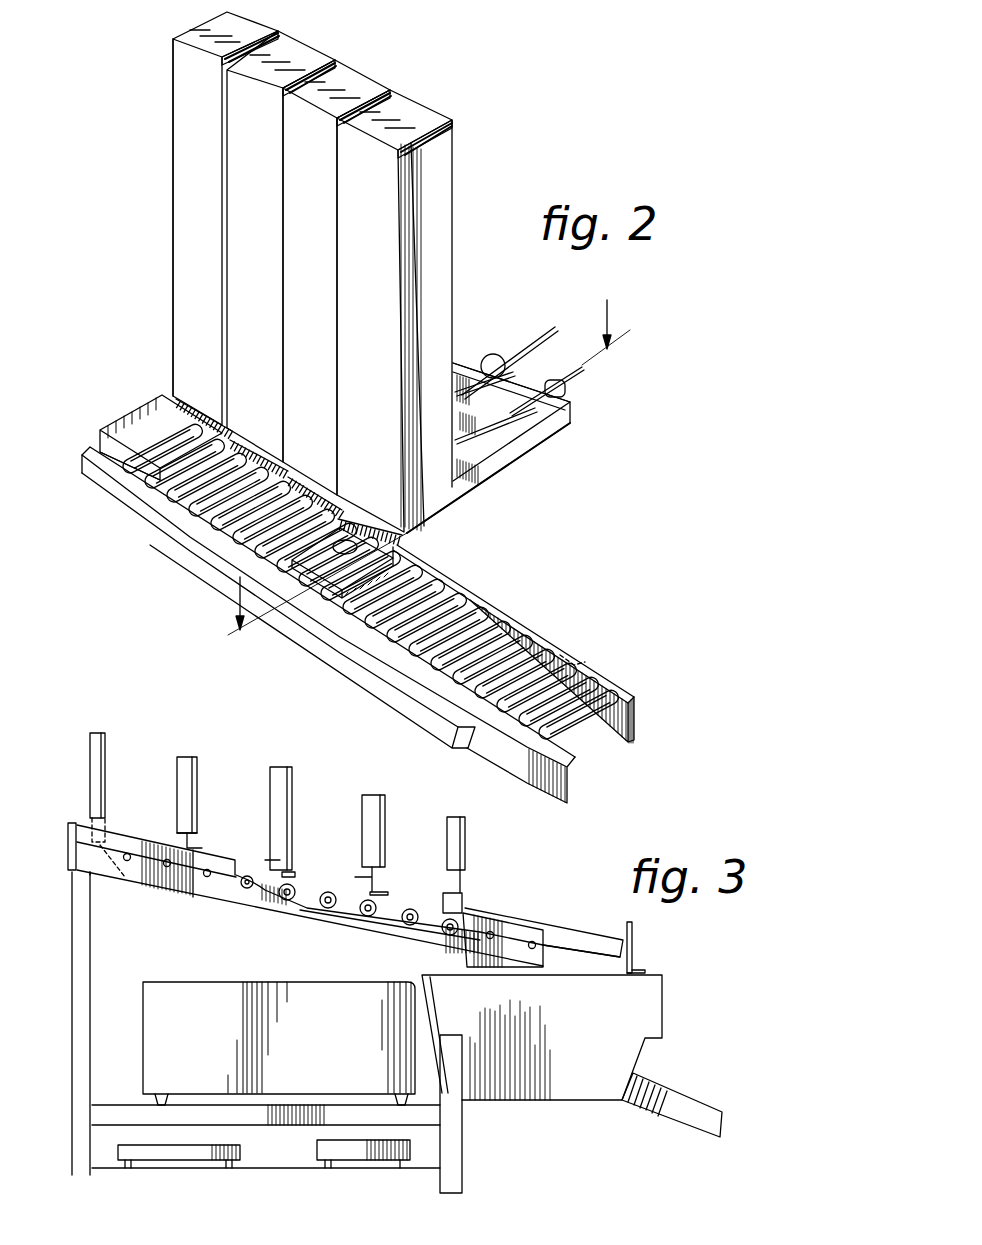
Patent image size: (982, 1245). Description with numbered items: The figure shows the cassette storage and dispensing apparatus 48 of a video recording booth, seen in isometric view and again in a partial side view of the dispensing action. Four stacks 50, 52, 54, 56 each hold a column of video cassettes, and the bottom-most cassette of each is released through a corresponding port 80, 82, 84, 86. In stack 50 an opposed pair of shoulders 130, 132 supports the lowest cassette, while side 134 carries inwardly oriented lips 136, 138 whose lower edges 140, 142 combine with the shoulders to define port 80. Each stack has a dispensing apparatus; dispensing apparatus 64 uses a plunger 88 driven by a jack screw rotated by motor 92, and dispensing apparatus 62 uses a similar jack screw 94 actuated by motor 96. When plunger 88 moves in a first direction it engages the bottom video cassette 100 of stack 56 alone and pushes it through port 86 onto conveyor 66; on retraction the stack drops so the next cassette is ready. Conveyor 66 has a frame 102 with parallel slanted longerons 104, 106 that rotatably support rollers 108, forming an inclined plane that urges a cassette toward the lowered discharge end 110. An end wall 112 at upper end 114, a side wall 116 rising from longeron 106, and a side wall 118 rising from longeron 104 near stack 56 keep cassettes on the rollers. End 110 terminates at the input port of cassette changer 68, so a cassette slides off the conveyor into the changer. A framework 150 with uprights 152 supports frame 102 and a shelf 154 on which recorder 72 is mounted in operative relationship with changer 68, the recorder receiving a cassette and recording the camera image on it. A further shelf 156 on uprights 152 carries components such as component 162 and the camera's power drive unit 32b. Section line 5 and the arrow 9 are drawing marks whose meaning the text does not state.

In FIG. 2, the section line 5- 5 is at (414, 455).
In FIG. 2, the rod end 9 is at (582, 374).
In FIG. 3, the power drive unit 32b is at (350, 1140).
In FIG. 2, the cassette storage and dispensing apparatus 48 is at (425, 493).
In FIG. 2, the stack 50 is at (260, 27).
In FIG. 3, the stack 50 is at (91, 760).
In FIG. 2, the stack 52 is at (323, 62).
In FIG. 2, the stack 54 is at (367, 90).
In FIG. 2, the stack 56 is at (410, 120).
In FIG. 2, the dispensing apparatus 62 is at (462, 363).
In FIG. 2, the dispensing apparatus 64 is at (565, 430).
In FIG. 2, the conveyor 66 is at (476, 601).
In FIG. 3, the cassette changer 68 is at (565, 1060).
In FIG. 3, the recorder 72 is at (208, 983).
In FIG. 2, the port 80 is at (182, 413).
In FIG. 2, the port 82 is at (242, 450).
In FIG. 2, the port 84 is at (310, 482).
In FIG. 2, the port 86 is at (360, 527).
In FIG. 2, the plunger 88 is at (468, 457).
In FIG. 2, the motor 92 is at (548, 380).
In FIG. 2, the jack screw 94 is at (524, 338).
In FIG. 2, the motor 96 is at (481, 356).
In FIG. 2, the video cassette 100 is at (318, 577).
In FIG. 2, the frame 102 is at (205, 573).
In FIG. 2, the longeron 104 is at (580, 657).
In FIG. 3, the longeron 104 is at (308, 910).
In FIG. 2, the longeron 106 is at (365, 660).
In FIG. 3, the longeron 106 is at (167, 890).
In FIG. 2, the rollers 108 is at (513, 627).
In FIG. 3, the rollers 108 is at (382, 922).
In FIG. 2, the discharge end 110 is at (475, 738).
In FIG. 3, the discharge end 110 is at (543, 958).
In FIG. 2, the end wall 112 is at (120, 420).
In FIG. 3, the end wall 112 is at (68, 823).
In FIG. 2, the upper end 114 is at (80, 450).
In FIG. 2, the side wall 116 is at (140, 467).
In FIG. 3, the side wall 116 is at (218, 867).
In FIG. 2, the side wall 118 is at (512, 612).
In FIG. 3, the side wall 118 is at (473, 913).
In FIG. 3, the shoulder 130 is at (293, 870).
In FIG. 3, the shoulder 132 is at (177, 843).
In FIG. 2, the side 134 is at (183, 167).
In FIG. 3, the lip 136 is at (107, 758).
In FIG. 3, the lip 138 is at (178, 757).
In FIG. 3, the lower edge 140 is at (105, 818).
In FIG. 3, the lower edge 142 is at (185, 826).
In FIG. 3, the framework 150 is at (617, 970).
In FIG. 3, the uprights 152 is at (92, 1065).
In FIG. 3, the shelf 154 is at (290, 1113).
In FIG. 3, the shelf 156 is at (252, 1168).
In FIG. 3, the component 162 is at (183, 1145).